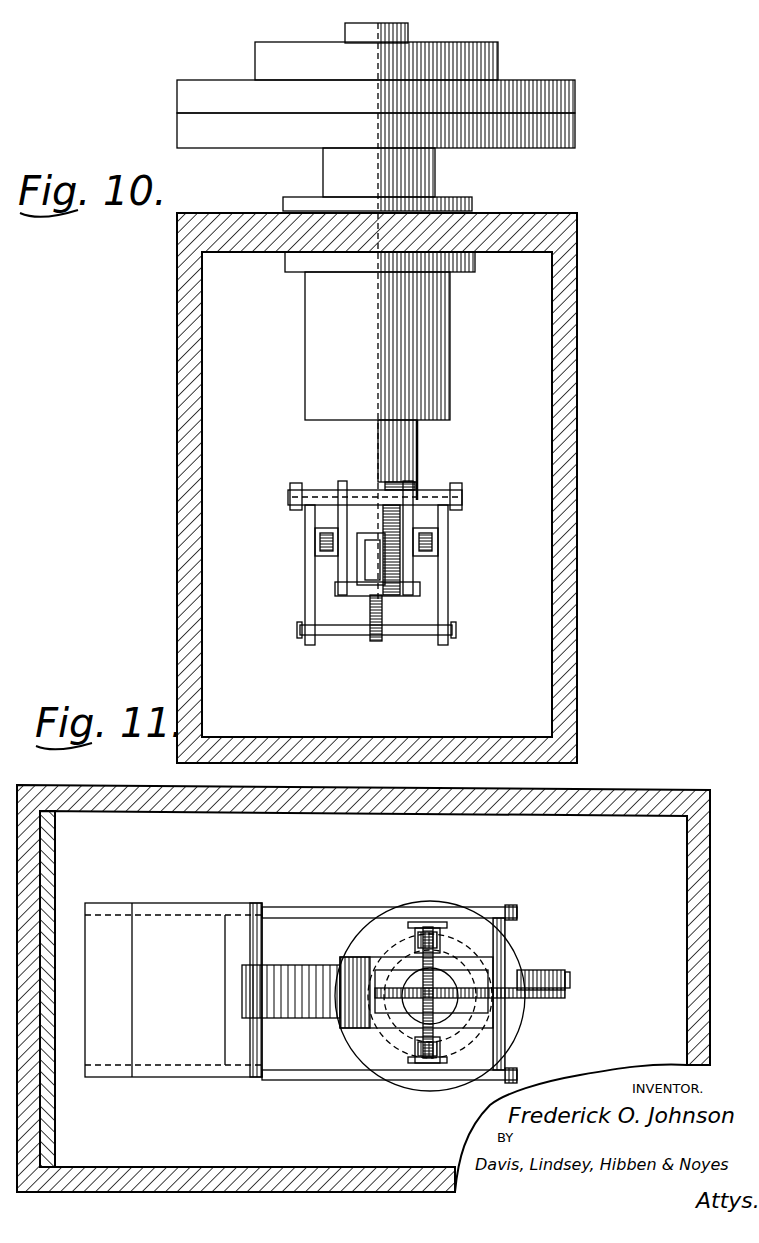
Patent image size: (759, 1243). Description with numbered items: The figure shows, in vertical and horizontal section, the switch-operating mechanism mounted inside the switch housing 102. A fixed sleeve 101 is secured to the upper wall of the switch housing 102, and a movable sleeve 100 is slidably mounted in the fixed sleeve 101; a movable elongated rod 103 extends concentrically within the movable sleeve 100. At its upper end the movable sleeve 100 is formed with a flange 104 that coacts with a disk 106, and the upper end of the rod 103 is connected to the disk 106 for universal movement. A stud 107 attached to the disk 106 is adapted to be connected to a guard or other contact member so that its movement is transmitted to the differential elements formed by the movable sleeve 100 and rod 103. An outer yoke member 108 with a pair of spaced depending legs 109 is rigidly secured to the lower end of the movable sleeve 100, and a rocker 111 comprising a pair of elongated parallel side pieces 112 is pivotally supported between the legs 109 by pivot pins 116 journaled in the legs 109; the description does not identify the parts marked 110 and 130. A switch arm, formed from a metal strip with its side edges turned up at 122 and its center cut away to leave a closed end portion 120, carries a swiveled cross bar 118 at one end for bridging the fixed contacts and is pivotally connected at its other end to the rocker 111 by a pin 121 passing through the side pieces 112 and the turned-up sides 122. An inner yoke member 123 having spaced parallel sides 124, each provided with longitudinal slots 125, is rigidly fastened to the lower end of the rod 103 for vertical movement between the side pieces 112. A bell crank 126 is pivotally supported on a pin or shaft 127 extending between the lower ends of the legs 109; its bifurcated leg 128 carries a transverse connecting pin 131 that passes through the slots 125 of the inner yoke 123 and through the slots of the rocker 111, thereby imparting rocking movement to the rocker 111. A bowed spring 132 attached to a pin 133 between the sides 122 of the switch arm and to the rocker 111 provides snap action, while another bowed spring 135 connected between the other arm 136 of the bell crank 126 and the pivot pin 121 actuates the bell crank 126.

In FIG. 10, the movable sleeve 100 is at (403, 437).
In FIG. 11, the movable sleeve 100 is at (500, 1055).
In FIG. 10, the fixed sleeve 101 is at (428, 335).
In FIG. 11, the fixed sleeve 101 is at (372, 928).
In FIG. 10, the switch housing 102 is at (570, 363).
In FIG. 11, the switch housing 102 is at (627, 793).
In FIG. 10, the movable elongated rod 103 is at (358, 487).
In FIG. 10, the flange 104 is at (575, 135).
In FIG. 10, the disk 106 is at (575, 100).
In FIG. 10, the stud 107 is at (410, 38).
In FIG. 10, the outer yoke member 108 is at (438, 490).
In FIG. 11, the outer yoke member 108 is at (485, 915).
In FIG. 10, the depending legs 109 is at (310, 590).
In FIG. 11, the depending legs 109 is at (372, 918).
In FIG. 10, the block 110 is at (318, 530).
In FIG. 11, the block 110 is at (440, 922).
In FIG. 10, the rocker 111 is at (415, 560).
In FIG. 11, the rocker 111 is at (362, 1040).
In FIG. 10, the side pieces 112 is at (398, 500).
In FIG. 11, the side pieces 112 is at (505, 955).
In FIG. 10, the pivot pins 116 is at (322, 541).
In FIG. 11, the pivot pins 116 is at (425, 1078).
In FIG. 11, the cross bar 118 is at (115, 1045).
In FIG. 10, the closed end portion 120 is at (365, 558).
In FIG. 11, the closed end portion 120 is at (195, 985).
In FIG. 10, the pin 121 is at (465, 497).
In FIG. 11, the pin 121 is at (515, 914).
In FIG. 10, the turned-up side edges 122 is at (290, 490).
In FIG. 11, the turned-up side edges 122 is at (297, 907).
In FIG. 10, the inner yoke member 123 is at (368, 530).
In FIG. 11, the inner yoke member 123 is at (495, 1010).
In FIG. 11, the sides of inner yoke member 124 is at (490, 1025).
In FIG. 10, the longitudinal slots 125 is at (345, 575).
In FIG. 10, the bell crank 126 is at (370, 622).
In FIG. 11, the bell crank 126 is at (520, 993).
In FIG. 10, the pin or shaft 127 is at (457, 630).
In FIG. 11, the pin or shaft 127 is at (510, 1078).
In FIG. 11, the leg of bell crank 128 is at (380, 1012).
In FIG. 10, the flange 130 is at (418, 590).
In FIG. 11, the flange 130 is at (330, 1045).
In FIG. 10, the transverse connecting pin 131 is at (368, 598).
In FIG. 11, the transverse connecting pin 131 is at (345, 965).
In FIG. 10, the bowed spring 132 is at (347, 635).
In FIG. 11, the bowed spring 132 is at (300, 1006).
In FIG. 11, the pin 133 is at (262, 940).
In FIG. 10, the bowed spring 135 is at (400, 484).
In FIG. 11, the bowed spring 135 is at (570, 975).
In FIG. 10, the arm of bell crank 136 is at (382, 628).
In FIG. 11, the arm of bell crank 136 is at (520, 972).